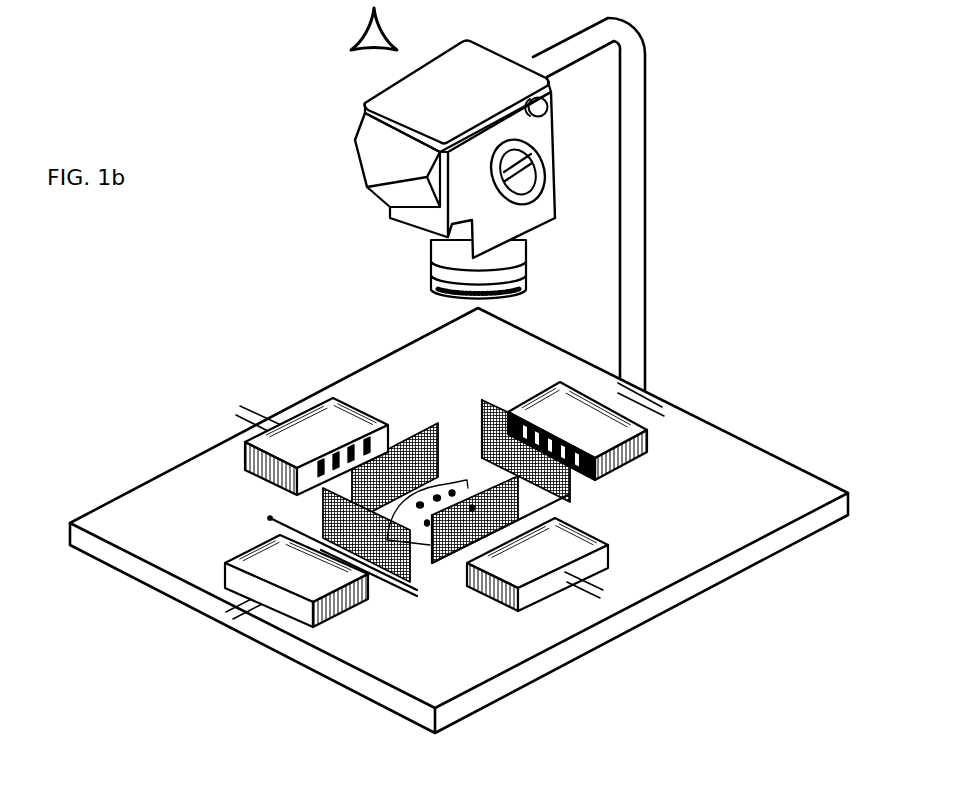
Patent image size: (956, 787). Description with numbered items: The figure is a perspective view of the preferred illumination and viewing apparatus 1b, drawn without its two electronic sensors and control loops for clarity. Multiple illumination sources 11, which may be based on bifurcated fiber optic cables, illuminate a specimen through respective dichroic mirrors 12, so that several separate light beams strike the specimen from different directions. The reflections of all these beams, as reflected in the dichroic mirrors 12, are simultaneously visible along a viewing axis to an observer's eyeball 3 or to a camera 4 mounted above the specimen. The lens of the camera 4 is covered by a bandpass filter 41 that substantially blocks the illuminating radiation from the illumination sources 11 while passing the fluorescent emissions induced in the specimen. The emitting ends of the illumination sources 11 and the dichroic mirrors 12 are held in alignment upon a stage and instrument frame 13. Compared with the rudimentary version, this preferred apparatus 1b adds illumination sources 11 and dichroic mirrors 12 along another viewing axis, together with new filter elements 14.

The illumination and viewing apparatus 1b is at (295, 339).
The observer's eyeball 3 is at (352, 48).
The camera 4 is at (468, 171).
The bandpass filter 41 is at (516, 284).
The illumination sources 11 is at (262, 477).
The dichroic mirrors 12 is at (432, 472).
The stage and instrument frame 13 is at (747, 534).
The filter elements 14 is at (482, 400).